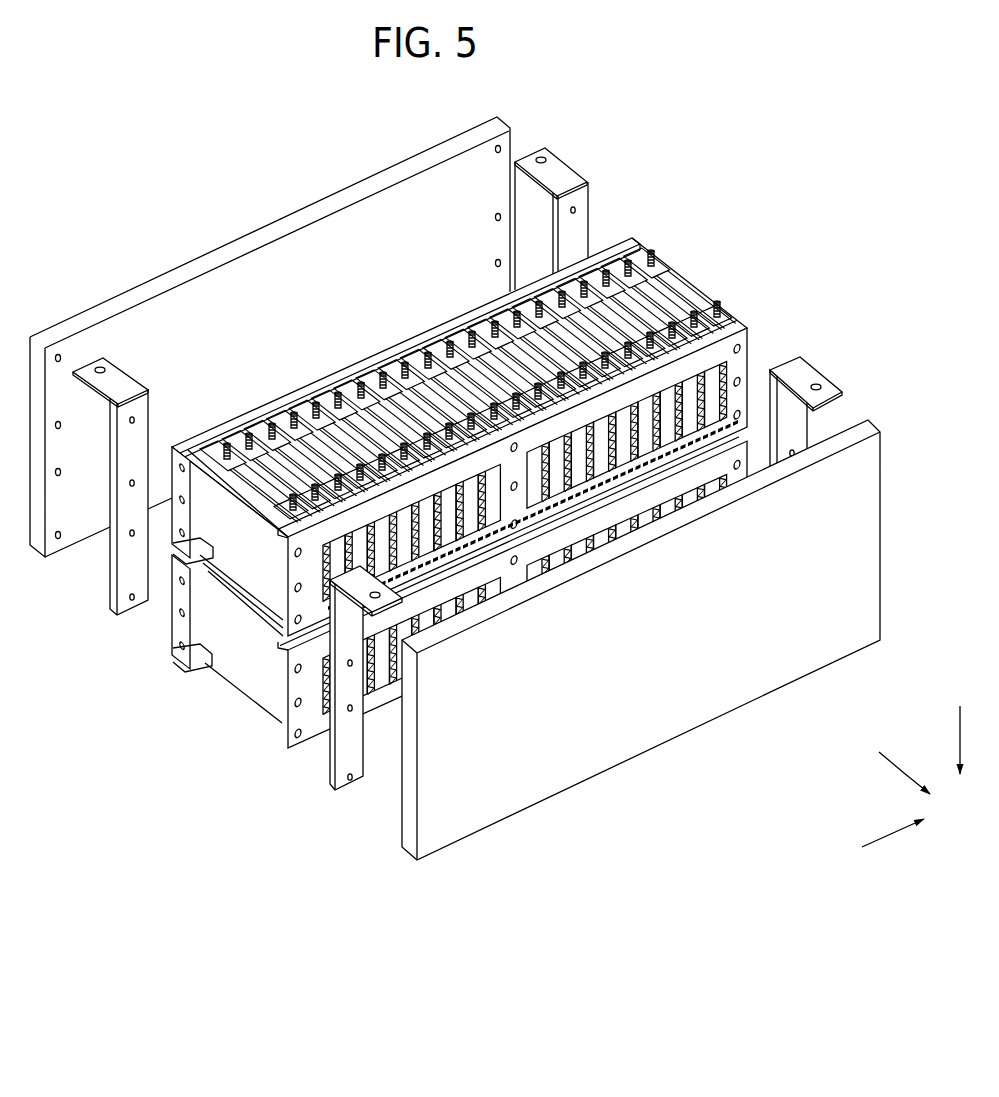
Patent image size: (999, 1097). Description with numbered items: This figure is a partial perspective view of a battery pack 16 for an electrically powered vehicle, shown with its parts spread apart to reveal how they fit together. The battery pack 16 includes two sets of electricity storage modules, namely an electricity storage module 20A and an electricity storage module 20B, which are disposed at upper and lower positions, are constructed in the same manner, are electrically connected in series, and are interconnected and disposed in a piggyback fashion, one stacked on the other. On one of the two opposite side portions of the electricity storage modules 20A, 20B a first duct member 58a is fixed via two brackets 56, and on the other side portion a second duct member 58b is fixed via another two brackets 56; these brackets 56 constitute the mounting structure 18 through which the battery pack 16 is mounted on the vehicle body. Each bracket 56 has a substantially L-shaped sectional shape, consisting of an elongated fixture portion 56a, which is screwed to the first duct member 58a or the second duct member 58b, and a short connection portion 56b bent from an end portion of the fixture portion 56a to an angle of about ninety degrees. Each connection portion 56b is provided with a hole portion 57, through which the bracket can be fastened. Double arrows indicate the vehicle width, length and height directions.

The battery pack 16 is at (361, 107).
The mounting structure 18 is at (603, 166).
The electricity storage module 20A is at (222, 532).
The electricity storage module 20B is at (238, 666).
The bracket 56 is at (132, 373).
The fixture portion 56a is at (346, 748).
The connection portion 56b is at (381, 604).
The hole portion 57 is at (100, 366).
The first duct member 58a is at (626, 761).
The second duct member 58b is at (170, 268).